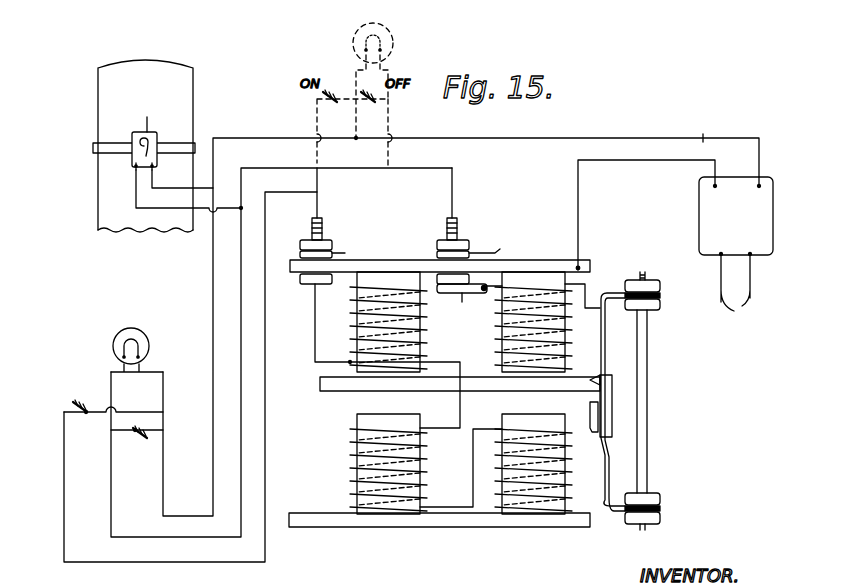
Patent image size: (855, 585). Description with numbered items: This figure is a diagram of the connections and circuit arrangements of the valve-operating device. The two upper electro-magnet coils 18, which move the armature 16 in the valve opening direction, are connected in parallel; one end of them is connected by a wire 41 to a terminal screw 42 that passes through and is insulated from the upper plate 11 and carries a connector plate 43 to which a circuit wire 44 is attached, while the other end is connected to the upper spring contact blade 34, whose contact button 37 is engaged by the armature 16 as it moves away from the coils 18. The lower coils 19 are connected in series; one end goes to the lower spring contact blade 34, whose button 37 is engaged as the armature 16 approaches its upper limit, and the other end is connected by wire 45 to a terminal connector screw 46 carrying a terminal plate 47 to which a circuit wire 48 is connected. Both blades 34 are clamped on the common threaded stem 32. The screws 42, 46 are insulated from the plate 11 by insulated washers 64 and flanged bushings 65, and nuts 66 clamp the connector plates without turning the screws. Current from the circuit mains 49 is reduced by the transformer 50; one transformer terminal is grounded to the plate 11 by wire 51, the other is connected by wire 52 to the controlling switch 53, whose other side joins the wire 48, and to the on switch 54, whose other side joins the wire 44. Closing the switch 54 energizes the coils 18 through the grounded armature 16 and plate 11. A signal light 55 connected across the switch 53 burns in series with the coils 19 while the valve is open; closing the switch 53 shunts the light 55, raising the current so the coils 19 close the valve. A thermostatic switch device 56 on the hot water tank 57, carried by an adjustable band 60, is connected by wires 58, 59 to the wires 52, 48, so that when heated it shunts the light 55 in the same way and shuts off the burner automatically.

The upper plate 11 is at (592, 268).
The armature 16 is at (320, 384).
The upper electro-magnet coils 18 is at (352, 344).
The lower coils 19 is at (352, 478).
The common stem or rod 32 is at (647, 322).
The spring contact blades 34 is at (600, 344).
The contact button 37 is at (600, 378).
The wire 41 is at (315, 315).
The terminal screw or connector 42 is at (311, 232).
The connector plate 43 is at (340, 253).
The circuit wire 44 is at (147, 562).
The wire 45 is at (460, 352).
The terminal connector screw 46 is at (457, 223).
The terminal plate or connector 47 is at (485, 253).
The circuit wire 48 is at (460, 186).
The circuit mains 49 is at (735, 290).
The transformer 50 is at (736, 216).
The wire 51 is at (581, 204).
The wire 52 is at (208, 268).
The controlling switch 53 is at (148, 432).
The on switch 54 is at (109, 413).
The signal light 55 is at (149, 345).
The thermostatically operated switch device 56 is at (138, 136).
The hot water storage tank or reservoir 57 is at (145, 146).
The circuit wire 58 is at (163, 188).
The circuit wire 59 is at (185, 208).
The band 60 is at (190, 143).
The insulated washers 64 is at (437, 260).
The flanged bushings 65 is at (456, 293).
The nuts 66 is at (437, 245).